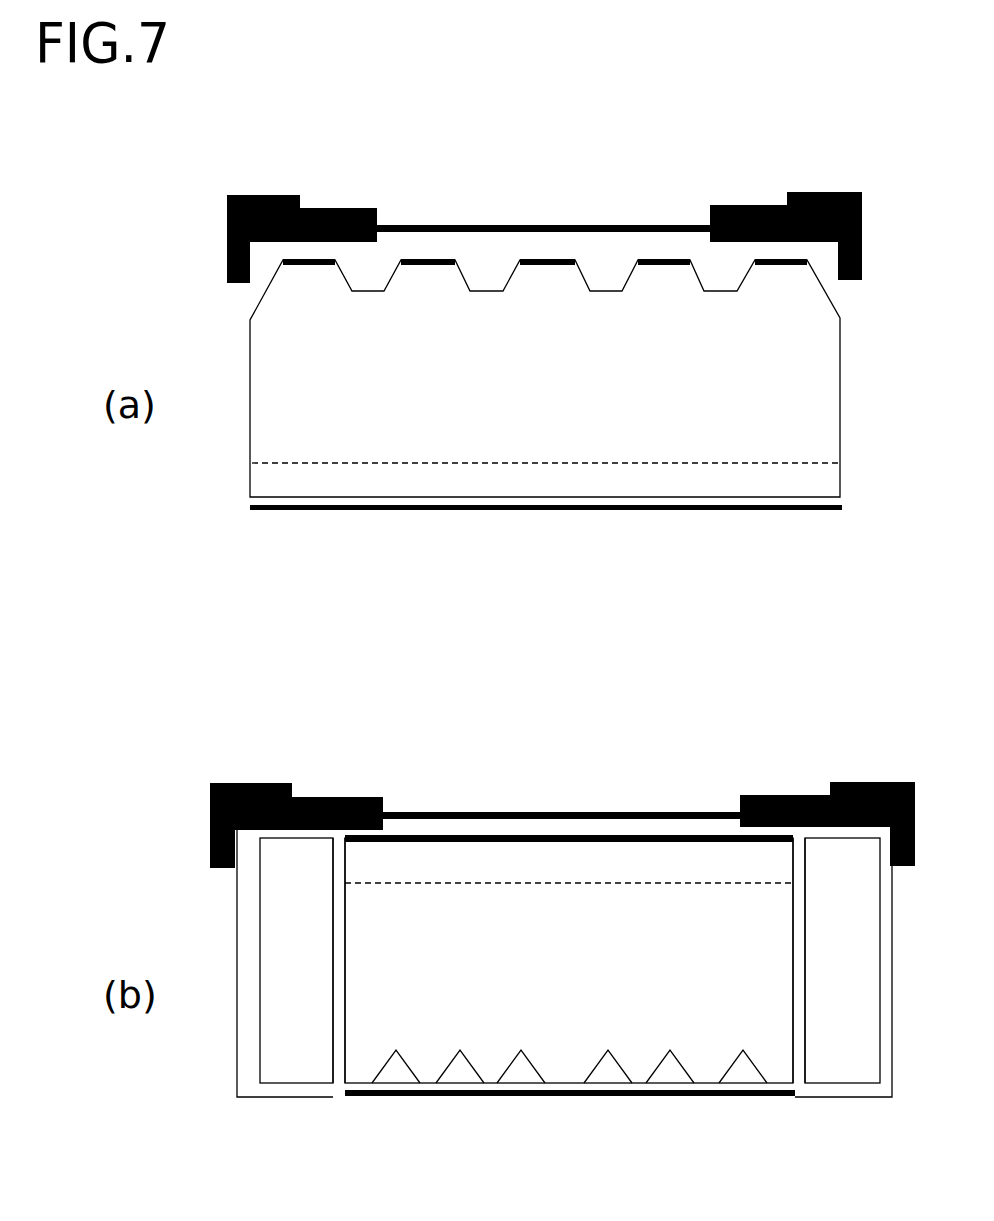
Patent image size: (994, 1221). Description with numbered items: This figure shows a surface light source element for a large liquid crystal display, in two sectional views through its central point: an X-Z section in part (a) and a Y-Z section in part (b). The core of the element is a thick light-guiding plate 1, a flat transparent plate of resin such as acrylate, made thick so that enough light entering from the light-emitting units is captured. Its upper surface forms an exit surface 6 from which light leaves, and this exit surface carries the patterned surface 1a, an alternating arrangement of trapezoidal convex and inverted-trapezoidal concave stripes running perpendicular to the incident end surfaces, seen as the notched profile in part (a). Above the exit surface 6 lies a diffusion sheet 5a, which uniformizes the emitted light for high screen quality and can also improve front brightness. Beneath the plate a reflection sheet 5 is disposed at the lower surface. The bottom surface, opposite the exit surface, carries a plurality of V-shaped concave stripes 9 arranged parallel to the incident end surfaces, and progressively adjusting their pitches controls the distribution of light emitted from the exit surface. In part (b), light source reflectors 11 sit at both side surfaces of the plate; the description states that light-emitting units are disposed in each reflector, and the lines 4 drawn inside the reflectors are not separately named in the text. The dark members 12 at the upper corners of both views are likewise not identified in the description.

The light-guiding plate 1 is at (545, 671).
The surface 1a is at (548, 581).
The side wall 4 is at (320, 937).
The reflection sheet 5 is at (545, 515).
The diffusion sheet 5a is at (550, 222).
The exit surface 6 is at (648, 247).
The concave stripes 9 is at (397, 1075).
The light source reflector 11 is at (290, 1097).
The terminal electrode 12 is at (268, 192).